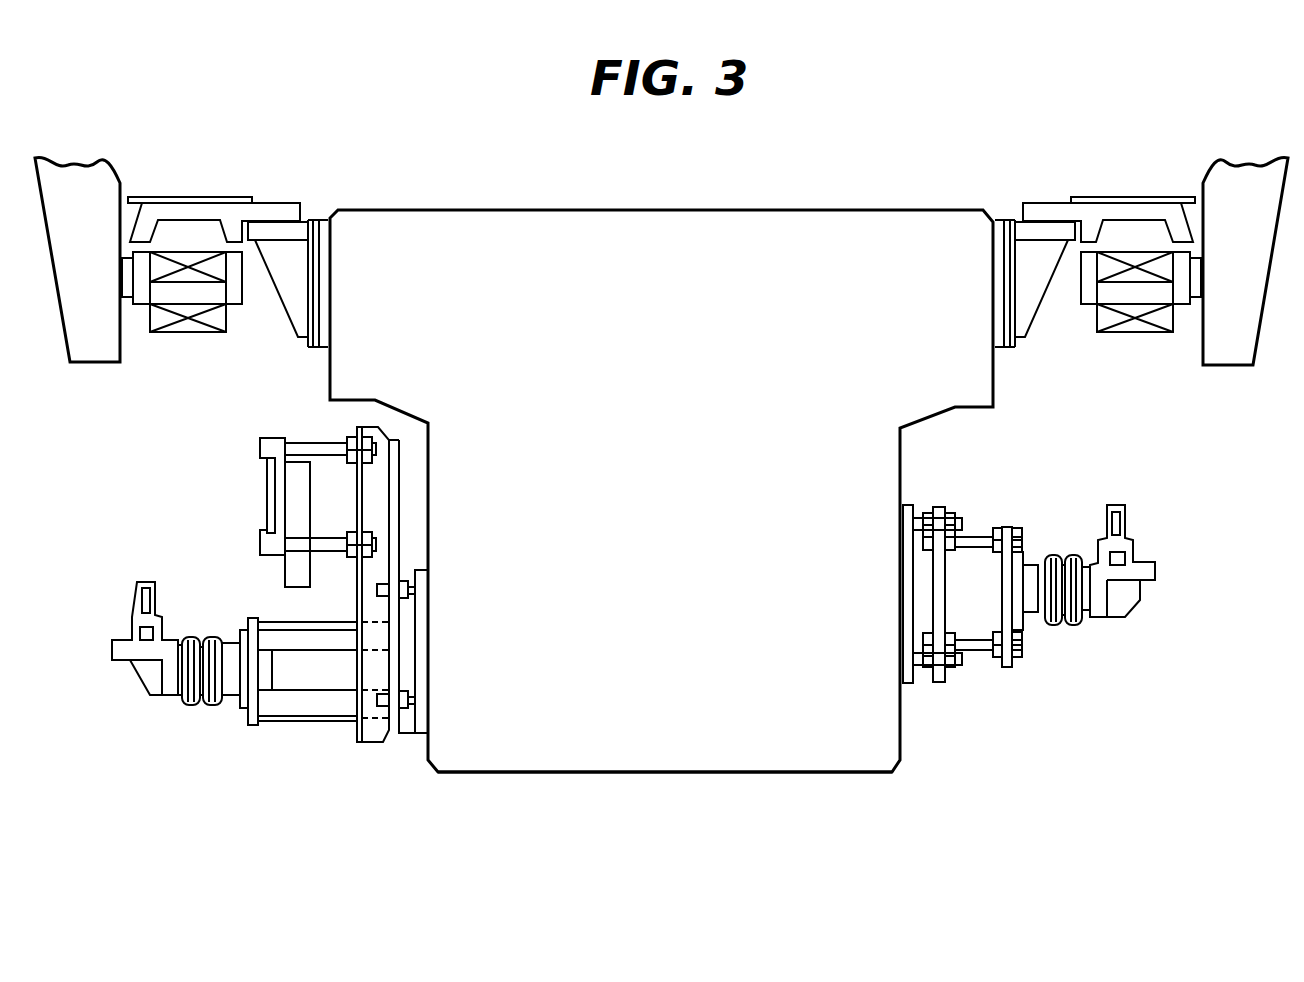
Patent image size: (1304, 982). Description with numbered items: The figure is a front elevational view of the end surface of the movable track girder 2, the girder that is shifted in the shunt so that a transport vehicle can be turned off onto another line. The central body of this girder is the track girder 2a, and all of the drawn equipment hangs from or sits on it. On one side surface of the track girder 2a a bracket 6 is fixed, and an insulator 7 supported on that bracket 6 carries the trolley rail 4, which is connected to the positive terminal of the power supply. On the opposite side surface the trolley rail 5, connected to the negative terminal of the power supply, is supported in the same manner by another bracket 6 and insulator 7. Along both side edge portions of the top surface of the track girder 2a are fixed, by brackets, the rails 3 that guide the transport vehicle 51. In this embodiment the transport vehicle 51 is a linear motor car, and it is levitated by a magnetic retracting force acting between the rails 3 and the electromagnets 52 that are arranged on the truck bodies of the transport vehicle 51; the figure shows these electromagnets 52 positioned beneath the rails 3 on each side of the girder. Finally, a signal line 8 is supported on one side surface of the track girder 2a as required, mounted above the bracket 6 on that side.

The movable track girder 2 is at (820, 210).
The track girder 2a is at (723, 738).
The rails 3 is at (235, 215).
The trolley rail 4 is at (1125, 518).
The trolley rail 5 is at (132, 620).
The bracket 6 is at (303, 720).
The insulator 7 is at (212, 707).
The signal line 8 is at (262, 486).
The transport vehicle 51 is at (98, 244).
The electromagnets 52 is at (193, 327).